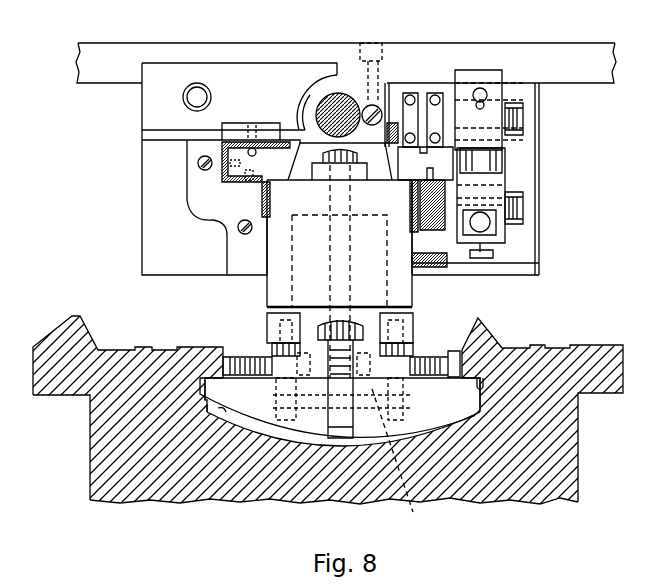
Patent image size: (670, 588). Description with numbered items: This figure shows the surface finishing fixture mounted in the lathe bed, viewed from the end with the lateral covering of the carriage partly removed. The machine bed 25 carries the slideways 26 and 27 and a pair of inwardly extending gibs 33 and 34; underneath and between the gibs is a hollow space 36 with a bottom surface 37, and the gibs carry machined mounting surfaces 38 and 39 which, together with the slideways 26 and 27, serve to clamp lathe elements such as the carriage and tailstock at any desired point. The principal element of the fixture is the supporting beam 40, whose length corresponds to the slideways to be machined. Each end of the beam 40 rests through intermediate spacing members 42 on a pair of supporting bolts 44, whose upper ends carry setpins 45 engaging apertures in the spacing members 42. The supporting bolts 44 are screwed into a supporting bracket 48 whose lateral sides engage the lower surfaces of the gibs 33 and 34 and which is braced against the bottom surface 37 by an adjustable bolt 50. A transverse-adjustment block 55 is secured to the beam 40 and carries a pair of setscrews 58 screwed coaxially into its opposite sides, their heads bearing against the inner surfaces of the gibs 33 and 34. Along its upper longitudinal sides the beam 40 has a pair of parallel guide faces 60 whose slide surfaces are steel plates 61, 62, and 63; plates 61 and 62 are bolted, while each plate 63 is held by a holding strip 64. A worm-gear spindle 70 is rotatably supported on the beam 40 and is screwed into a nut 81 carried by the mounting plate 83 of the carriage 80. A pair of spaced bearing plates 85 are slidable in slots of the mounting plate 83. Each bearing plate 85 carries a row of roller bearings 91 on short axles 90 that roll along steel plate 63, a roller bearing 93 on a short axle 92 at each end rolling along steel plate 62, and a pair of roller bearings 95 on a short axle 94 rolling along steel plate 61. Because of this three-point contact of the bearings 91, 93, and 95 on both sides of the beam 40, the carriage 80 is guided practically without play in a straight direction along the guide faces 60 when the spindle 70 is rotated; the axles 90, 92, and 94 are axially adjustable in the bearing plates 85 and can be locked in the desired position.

The machine bed 25 is at (565, 470).
The slideway 26 is at (110, 355).
The slideway 27 is at (540, 345).
The gib 33 is at (215, 355).
The gib 34 is at (467, 358).
The hollow space 36 is at (205, 412).
The bottom surface 37 is at (228, 420).
The mounting surface 38 is at (197, 397).
The mounting surface 39 is at (478, 383).
The supporting beam 40 is at (403, 290).
The spacing member 42 is at (272, 315).
The supporting bolt 44 is at (270, 345).
The setpin 45 is at (268, 325).
The supporting bracket 48 is at (303, 410).
The adjustable bolt 50 is at (340, 440).
The transverse-adjustment block 55 is at (400, 462).
The setscrew 58 is at (430, 357).
The guide face 60 is at (266, 150).
The steel plate 61 is at (398, 150).
The steel plate 62 is at (224, 172).
The steel plate 63 is at (234, 182).
The holding strip 64 is at (272, 185).
The worm-gear spindle 70 is at (345, 97).
The carriage 80 is at (556, 131).
The nut 81 is at (362, 90).
The mounting plate 83 is at (571, 57).
The bearing plate 85 is at (490, 78).
The short axle 90 is at (528, 205).
The roller bearing 91 is at (435, 228).
The short axle 92 is at (503, 180).
The roller bearing 93 is at (500, 163).
The short axle 94 is at (525, 110).
The roller bearing 95 is at (435, 93).